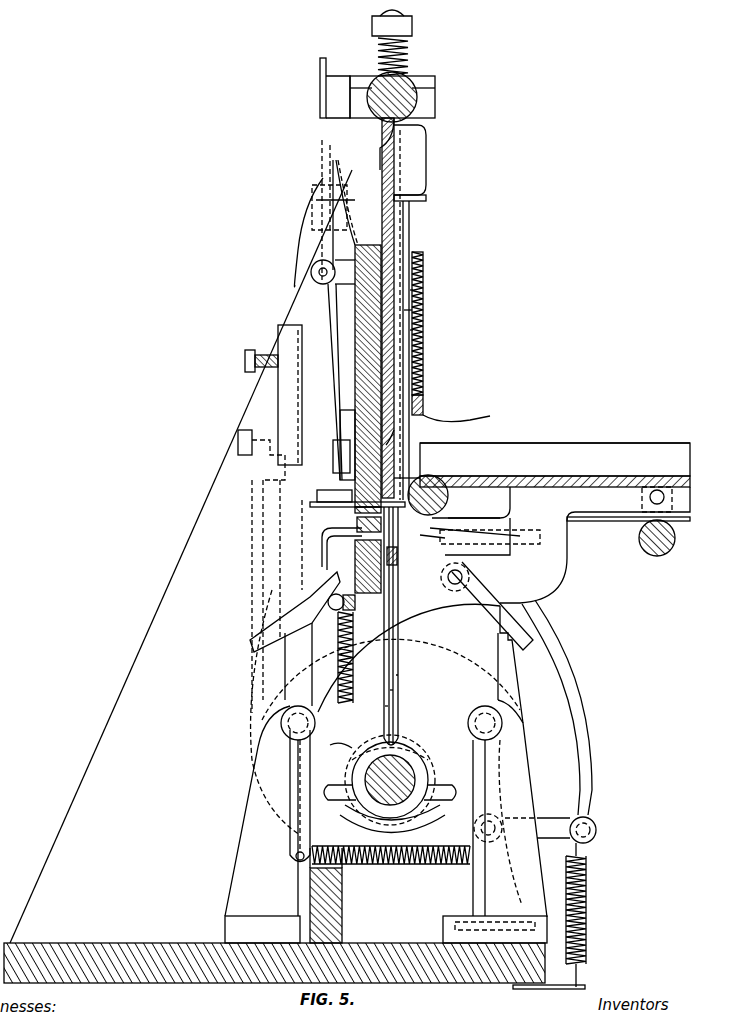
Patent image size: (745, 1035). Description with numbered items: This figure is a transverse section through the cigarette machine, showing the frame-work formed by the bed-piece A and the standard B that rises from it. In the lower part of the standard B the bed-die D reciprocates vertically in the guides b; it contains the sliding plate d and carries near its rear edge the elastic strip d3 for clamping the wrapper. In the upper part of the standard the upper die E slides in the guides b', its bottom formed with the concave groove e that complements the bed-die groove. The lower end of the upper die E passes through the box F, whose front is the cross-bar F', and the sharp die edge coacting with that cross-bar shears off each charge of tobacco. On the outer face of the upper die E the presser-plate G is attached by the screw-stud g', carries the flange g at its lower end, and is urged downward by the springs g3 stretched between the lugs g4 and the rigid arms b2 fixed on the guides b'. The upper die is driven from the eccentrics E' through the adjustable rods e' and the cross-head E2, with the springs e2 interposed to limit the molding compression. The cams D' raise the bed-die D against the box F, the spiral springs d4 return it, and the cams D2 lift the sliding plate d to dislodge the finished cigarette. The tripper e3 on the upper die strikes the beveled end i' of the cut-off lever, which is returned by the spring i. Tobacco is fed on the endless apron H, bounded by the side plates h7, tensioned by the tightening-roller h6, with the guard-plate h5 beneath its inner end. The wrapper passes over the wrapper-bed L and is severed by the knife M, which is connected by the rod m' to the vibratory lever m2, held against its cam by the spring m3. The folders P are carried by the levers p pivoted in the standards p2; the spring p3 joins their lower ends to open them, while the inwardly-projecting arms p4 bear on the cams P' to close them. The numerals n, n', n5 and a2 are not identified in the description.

The bed-piece A is at (214, 983).
The tripper e3 is at (320, 97).
The springs e2 is at (408, 60).
The cross-head E2 is at (412, 112).
The upper die E is at (410, 308).
The lugs g4 is at (418, 201).
The wrapper-bed L is at (345, 386).
The presser-plate G is at (423, 366).
The springs g3 is at (413, 290).
The guides b' is at (434, 307).
The screw-stud g' is at (431, 327).
The flange g is at (434, 406).
The rigid arms b2 is at (460, 413).
The concave groove e is at (389, 435).
The box F is at (374, 466).
The cross-bar F' is at (429, 452).
The beveled end i' is at (327, 210).
The spring i is at (335, 187).
The adjustable rods e' is at (324, 329).
The nut n is at (344, 445).
The folders P is at (342, 549).
The sleeve a2 is at (397, 548).
The eccentrics E' is at (424, 626).
The guides b is at (417, 678).
The bed-die D is at (408, 693).
The sliding plate d is at (389, 706).
The strip d3 is at (334, 602).
The spiral springs d4 is at (338, 650).
The endless apron H is at (690, 478).
The side plates h7 is at (555, 452).
The roller n' is at (440, 495).
The knife M is at (474, 518).
The guard-plate h5 is at (485, 537).
The pin n5 is at (436, 535).
The tightening-roller h6 is at (660, 552).
The rod m' is at (520, 688).
The vibratory lever m2 is at (550, 818).
The spring m3 is at (587, 890).
The levers p is at (391, 742).
The standard B is at (389, 768).
The cams D2 is at (390, 746).
The cams P' is at (345, 738).
The inwardly-projecting arm p4 is at (390, 789).
The cams D' is at (392, 819).
The standards p2 is at (390, 747).
The spring p3 is at (391, 866).